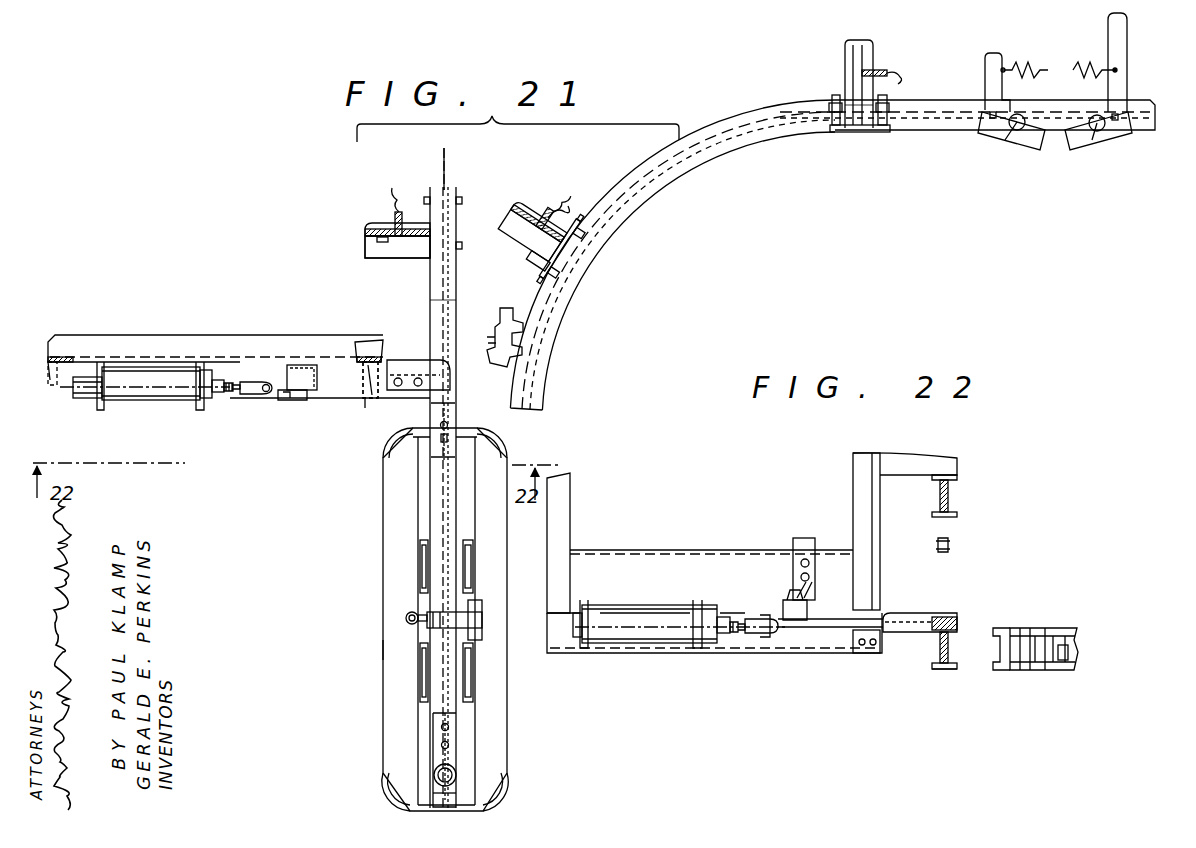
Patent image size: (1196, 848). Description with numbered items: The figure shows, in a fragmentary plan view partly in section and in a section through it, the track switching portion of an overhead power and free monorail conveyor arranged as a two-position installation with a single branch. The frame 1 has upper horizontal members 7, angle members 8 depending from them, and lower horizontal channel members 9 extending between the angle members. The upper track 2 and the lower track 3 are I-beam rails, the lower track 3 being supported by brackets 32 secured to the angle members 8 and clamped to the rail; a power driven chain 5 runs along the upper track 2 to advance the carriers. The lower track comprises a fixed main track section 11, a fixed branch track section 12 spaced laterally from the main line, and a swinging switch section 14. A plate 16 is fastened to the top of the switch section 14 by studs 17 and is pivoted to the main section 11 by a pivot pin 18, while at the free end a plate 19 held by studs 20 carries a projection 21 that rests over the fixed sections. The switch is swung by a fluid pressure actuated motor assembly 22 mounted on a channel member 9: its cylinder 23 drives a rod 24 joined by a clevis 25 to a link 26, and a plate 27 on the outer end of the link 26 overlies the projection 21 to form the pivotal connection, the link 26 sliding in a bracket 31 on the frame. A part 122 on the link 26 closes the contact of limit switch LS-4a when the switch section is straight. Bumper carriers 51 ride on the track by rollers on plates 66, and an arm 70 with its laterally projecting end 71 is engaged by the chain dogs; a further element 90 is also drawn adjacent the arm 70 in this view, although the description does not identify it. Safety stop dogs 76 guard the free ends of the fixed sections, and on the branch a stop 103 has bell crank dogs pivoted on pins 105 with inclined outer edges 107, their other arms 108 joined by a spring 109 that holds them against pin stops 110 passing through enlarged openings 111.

In FIG. 21, the frame 1 is at (649, 144).
In FIG. 21, the upper track 2 is at (450, 348).
In FIG. 22, the upper track 2 is at (950, 503).
In FIG. 22, the lower track 3 is at (936, 645).
In FIG. 21, the power driven chain 5 is at (440, 157).
In FIG. 22, the power driven chain 5 is at (950, 546).
In FIG. 21, the upper horizontal members 7 is at (403, 246).
In FIG. 21, the angle members 8 is at (58, 372).
In FIG. 22, the angle members 8 is at (573, 545).
In FIG. 21, the lower horizontal channel members 9 is at (160, 347).
In FIG. 22, the lower horizontal channel members 9 is at (674, 562).
In FIG. 21, the fixed main track section 11 is at (437, 793).
In FIG. 21, the fixed branch track section 12 is at (545, 360).
In FIG. 22, the fixed branch track section 12 is at (1040, 640).
In FIG. 21, the swinging switch section 14 is at (437, 488).
In FIG. 22, the swinging switch section 14 is at (947, 672).
In FIG. 21, the plate 16 is at (438, 737).
In FIG. 21, the studs 17 is at (449, 727).
In FIG. 21, the pivot pin 18 is at (456, 772).
In FIG. 21, the plate 19 is at (453, 440).
In FIG. 21, the studs 20 is at (367, 427).
In FIG. 21, the projection 21 is at (449, 420).
In FIG. 21, the fluid pressure actuated motor assembly 22 is at (181, 401).
In FIG. 22, the fluid pressure actuated motor assembly 22 is at (655, 650).
In FIG. 21, the cylinder 23 is at (160, 390).
In FIG. 22, the cylinder 23 is at (686, 634).
In FIG. 21, the rod 24 is at (238, 378).
In FIG. 21, the clevis 25 is at (256, 396).
In FIG. 22, the clevis 25 is at (757, 636).
In FIG. 21, the link 26 is at (368, 398).
In FIG. 22, the link 26 is at (860, 654).
In FIG. 21, the plate 27 is at (408, 360).
In FIG. 22, the plate 27 is at (915, 615).
In FIG. 21, the bracket 31 is at (366, 345).
In FIG. 21, the brackets 32 is at (366, 232).
In FIG. 21, the bumper carriers 51 is at (381, 655).
In FIG. 21, the plates 66 is at (466, 580).
In FIG. 21, the arm 70 is at (483, 622).
In FIG. 21, the end portion of arm 71 is at (440, 612).
In FIG. 21, the safety stop dogs 76 is at (503, 312).
In FIG. 21, the roller 90 is at (405, 620).
In FIG. 21, the stop 103 is at (1057, 144).
In FIG. 21, the pins 105 is at (992, 122).
In FIG. 21, the outer edges 107 is at (1032, 142).
In FIG. 21, the arms 108 is at (997, 58).
In FIG. 21, the spring 109 is at (1040, 66).
In FIG. 21, the stops 110 is at (1020, 116).
In FIG. 21, the enlarged openings 111 is at (1015, 128).
In FIG. 21, the part 122 is at (293, 401).
In FIG. 22, the part 122 is at (795, 622).
In FIG. 21, the limit switch LS-4a is at (300, 375).
In FIG. 22, the limit switch LS-4a is at (803, 548).